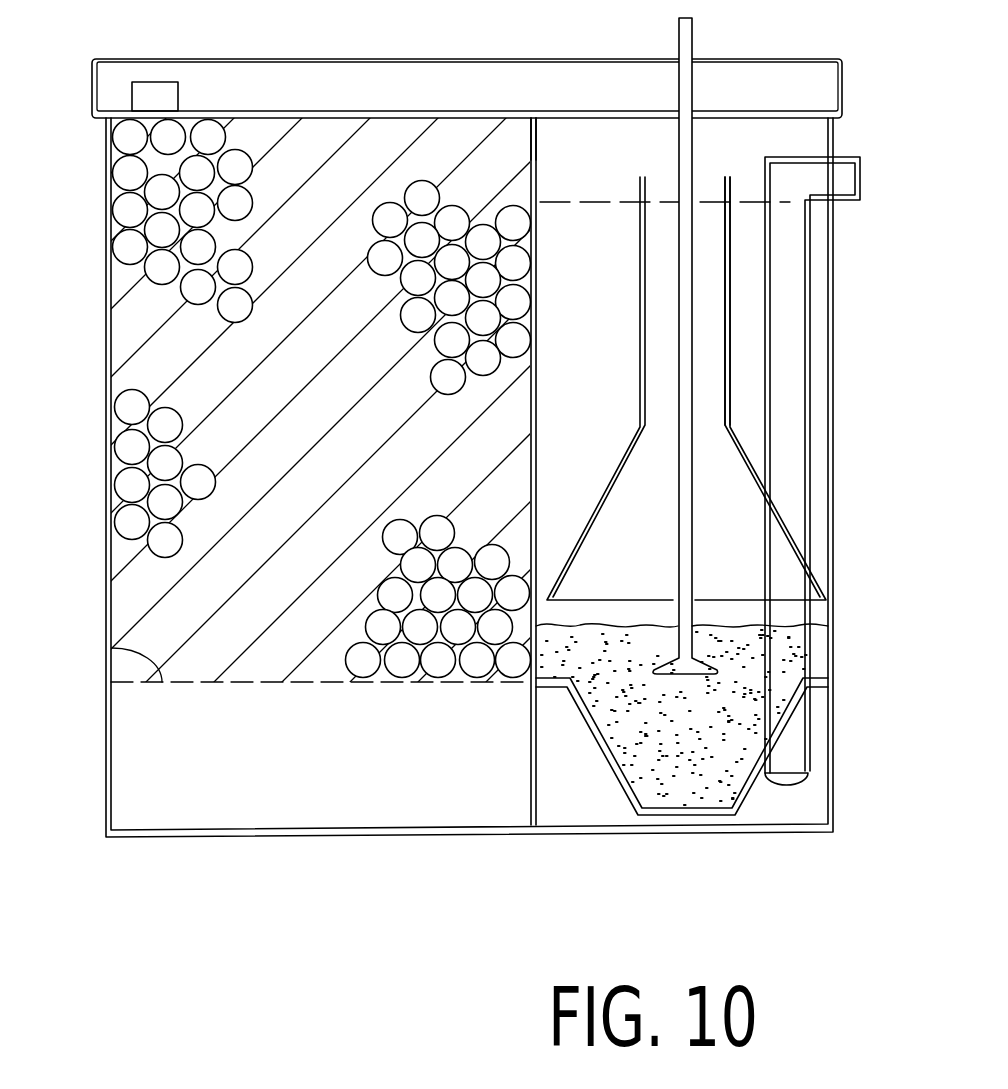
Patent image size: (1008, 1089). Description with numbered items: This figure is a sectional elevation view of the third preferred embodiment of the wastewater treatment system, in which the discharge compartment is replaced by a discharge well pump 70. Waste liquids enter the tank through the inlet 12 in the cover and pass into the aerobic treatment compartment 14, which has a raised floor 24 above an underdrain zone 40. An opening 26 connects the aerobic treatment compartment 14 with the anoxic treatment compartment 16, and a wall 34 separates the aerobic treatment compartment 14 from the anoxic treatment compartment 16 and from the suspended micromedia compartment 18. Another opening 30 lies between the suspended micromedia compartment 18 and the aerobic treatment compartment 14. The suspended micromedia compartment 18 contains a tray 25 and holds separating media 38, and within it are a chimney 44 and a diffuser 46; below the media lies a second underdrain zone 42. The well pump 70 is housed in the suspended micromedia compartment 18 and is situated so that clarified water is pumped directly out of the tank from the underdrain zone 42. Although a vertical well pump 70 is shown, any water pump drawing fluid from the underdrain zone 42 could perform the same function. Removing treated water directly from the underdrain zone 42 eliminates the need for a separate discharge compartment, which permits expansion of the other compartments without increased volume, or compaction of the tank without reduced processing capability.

The inlet 12 is at (157, 96).
The aerobic treatment compartment 14 is at (299, 381).
The anoxic treatment compartment 16 is at (430, 96).
The suspended micromedia compartment 18 is at (623, 516).
The raised floor 24 is at (110, 648).
The tray 25 is at (606, 202).
The opening 26 is at (447, 790).
The opening 30 is at (536, 158).
The wall 34 is at (537, 312).
The separating media 38 is at (792, 652).
The underdrain zone 40 is at (318, 776).
The underdrain zone 42 is at (563, 788).
The chimney 44 is at (712, 313).
The diffuser 46 is at (702, 684).
The discharge well pump 70 is at (788, 240).